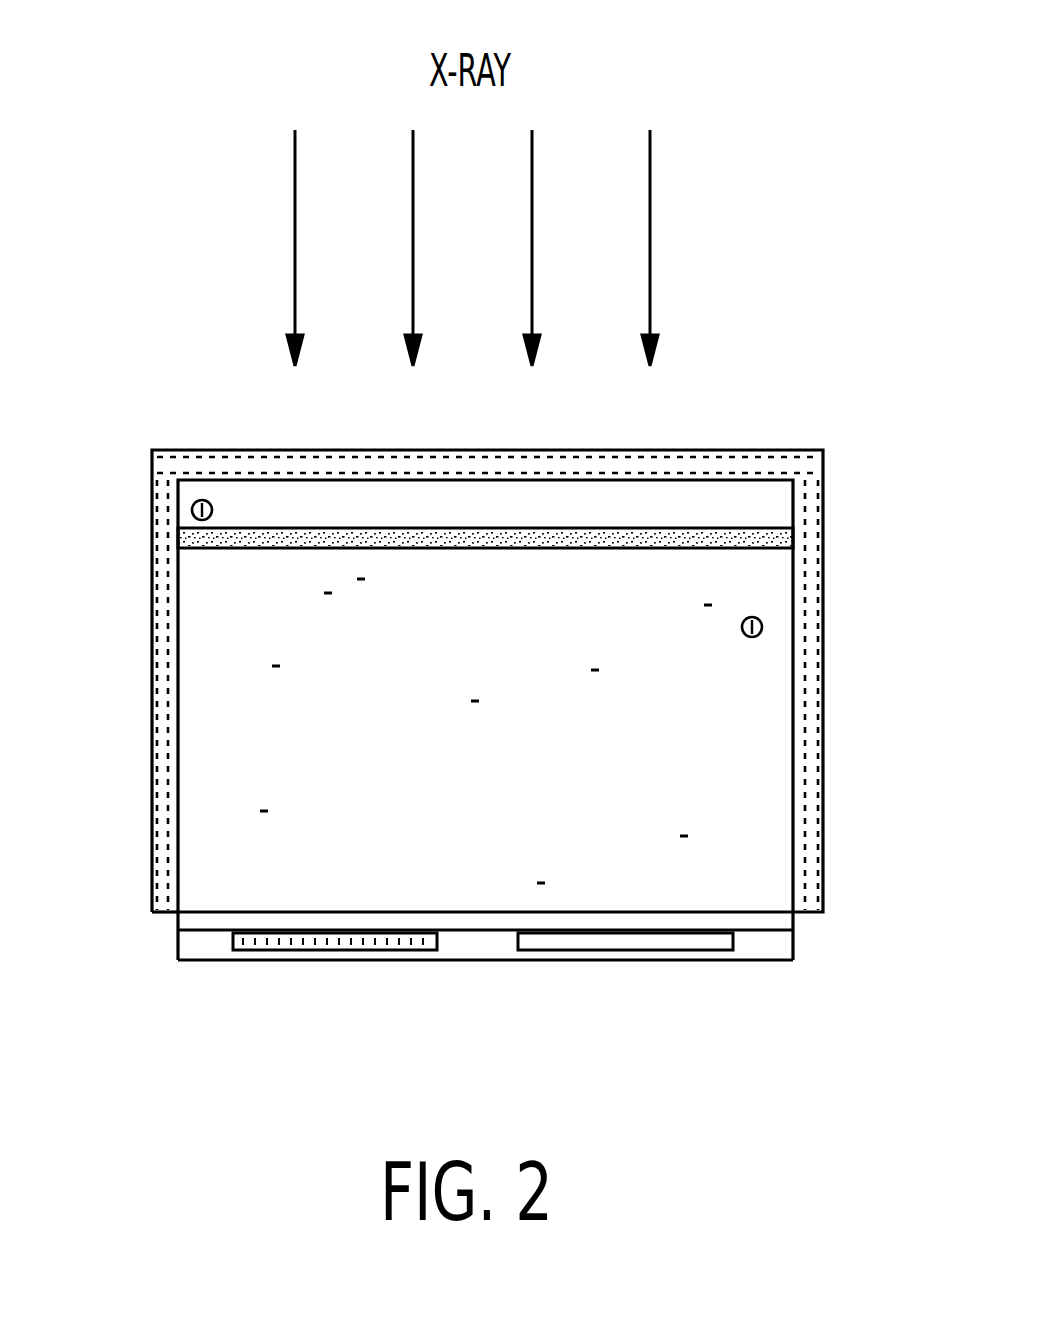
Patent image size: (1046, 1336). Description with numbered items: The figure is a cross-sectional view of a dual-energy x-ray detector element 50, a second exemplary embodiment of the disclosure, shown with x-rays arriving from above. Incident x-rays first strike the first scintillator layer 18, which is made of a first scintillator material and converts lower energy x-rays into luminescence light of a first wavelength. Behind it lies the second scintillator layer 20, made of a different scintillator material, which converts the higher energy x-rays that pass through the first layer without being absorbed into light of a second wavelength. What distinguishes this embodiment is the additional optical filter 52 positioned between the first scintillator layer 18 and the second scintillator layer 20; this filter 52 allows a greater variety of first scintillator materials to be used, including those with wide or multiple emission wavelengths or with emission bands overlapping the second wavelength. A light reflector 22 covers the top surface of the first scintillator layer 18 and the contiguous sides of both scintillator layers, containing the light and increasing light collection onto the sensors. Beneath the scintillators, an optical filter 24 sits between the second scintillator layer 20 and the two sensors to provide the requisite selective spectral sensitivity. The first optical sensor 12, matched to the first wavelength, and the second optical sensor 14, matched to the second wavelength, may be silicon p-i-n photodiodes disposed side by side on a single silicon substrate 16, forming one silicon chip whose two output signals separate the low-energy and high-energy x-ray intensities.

The first optical sensor 12 is at (323, 950).
The second optical sensor 14 is at (637, 950).
The silicon substrate 16 is at (474, 960).
The first scintillator layer 18 is at (191, 508).
The second scintillator layer 20 is at (763, 625).
The light reflector 22 is at (150, 660).
The optical filter 24 is at (246, 911).
The dual-energy x-ray detector element 50 is at (876, 345).
The additional optical filter 52 is at (648, 527).